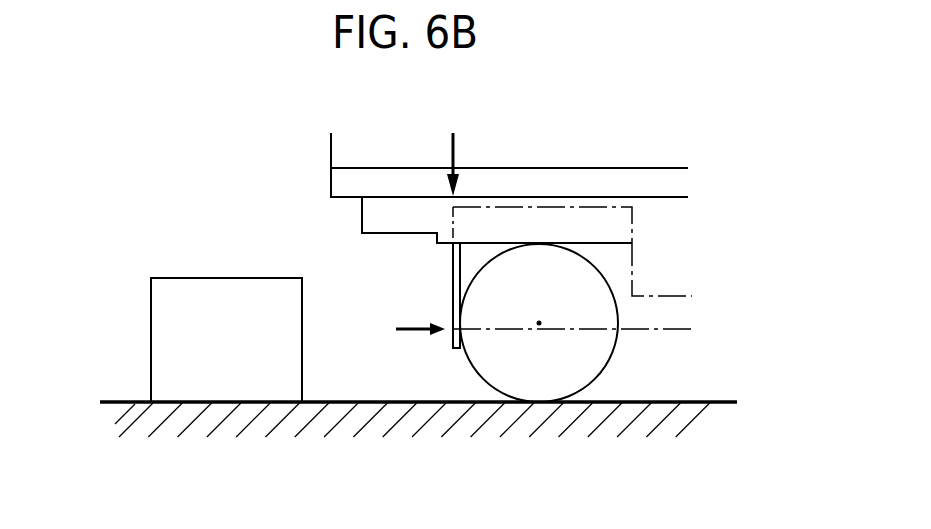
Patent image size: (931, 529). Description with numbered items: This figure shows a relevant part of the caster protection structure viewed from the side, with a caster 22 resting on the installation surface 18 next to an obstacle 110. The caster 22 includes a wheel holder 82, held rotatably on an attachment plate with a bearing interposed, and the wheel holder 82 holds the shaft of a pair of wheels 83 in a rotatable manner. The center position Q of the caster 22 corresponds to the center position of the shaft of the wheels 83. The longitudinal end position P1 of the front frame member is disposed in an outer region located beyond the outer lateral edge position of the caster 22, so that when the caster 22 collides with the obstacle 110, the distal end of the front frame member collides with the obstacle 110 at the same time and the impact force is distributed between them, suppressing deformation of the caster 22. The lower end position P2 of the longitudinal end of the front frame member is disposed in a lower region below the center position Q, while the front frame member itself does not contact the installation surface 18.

The obstacle 110 is at (210, 300).
The wheel holder 82 is at (473, 263).
The caster 22 is at (500, 360).
The wheel 83 is at (567, 372).
The installation surface 18 is at (697, 403).
The center position of the caster Q is at (541, 327).
The longitudinal end position of the front frame member P1 is at (454, 150).
The lower end position of the front frame member P2 is at (403, 328).